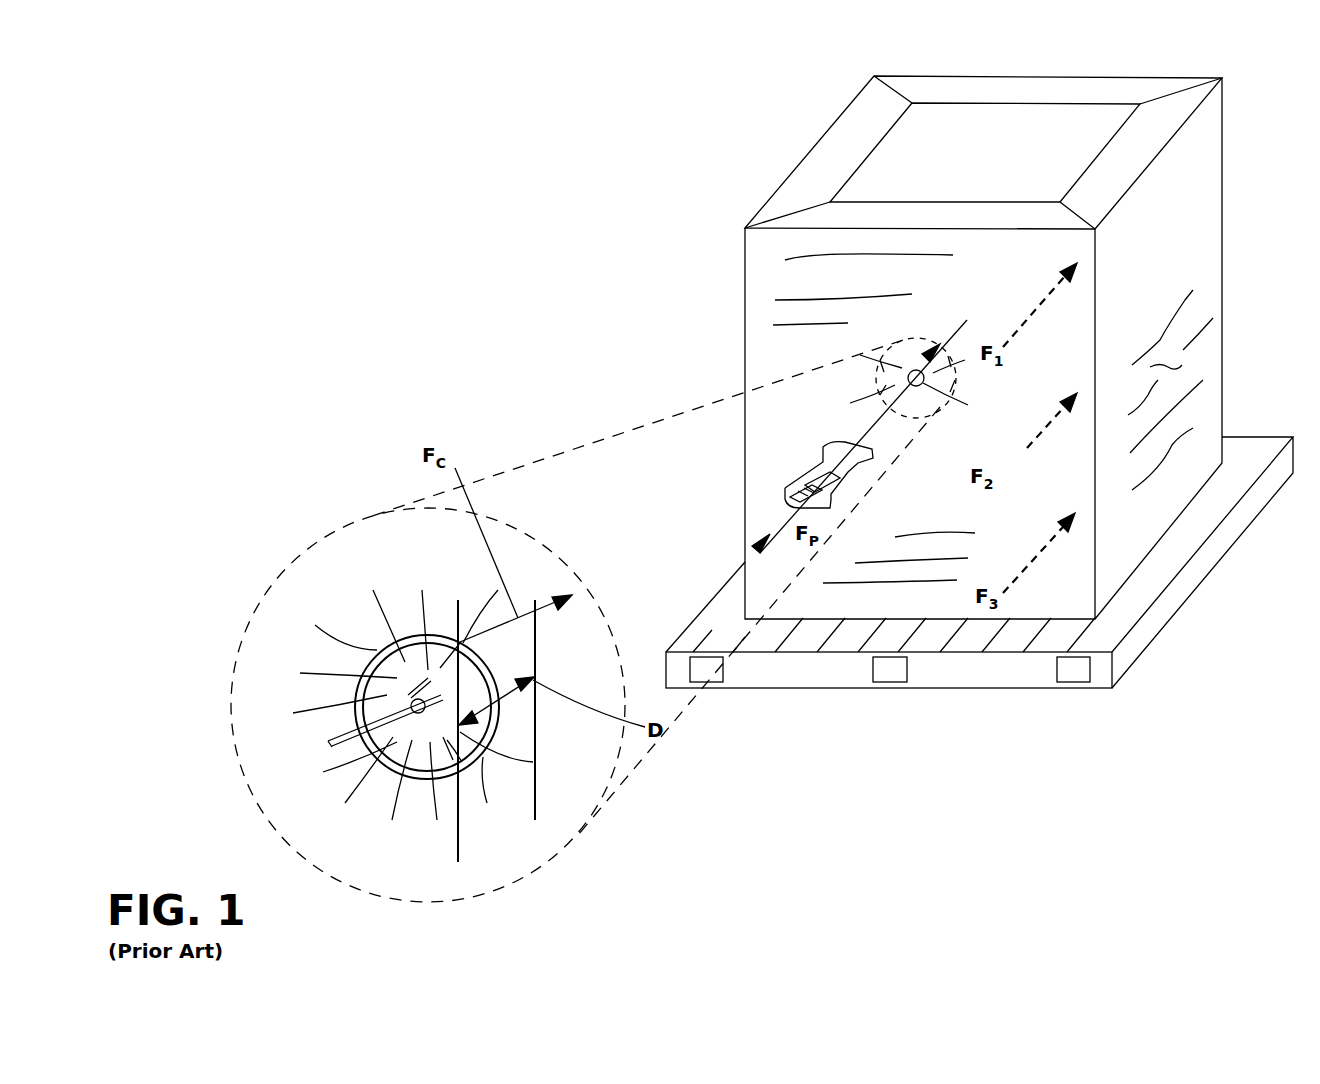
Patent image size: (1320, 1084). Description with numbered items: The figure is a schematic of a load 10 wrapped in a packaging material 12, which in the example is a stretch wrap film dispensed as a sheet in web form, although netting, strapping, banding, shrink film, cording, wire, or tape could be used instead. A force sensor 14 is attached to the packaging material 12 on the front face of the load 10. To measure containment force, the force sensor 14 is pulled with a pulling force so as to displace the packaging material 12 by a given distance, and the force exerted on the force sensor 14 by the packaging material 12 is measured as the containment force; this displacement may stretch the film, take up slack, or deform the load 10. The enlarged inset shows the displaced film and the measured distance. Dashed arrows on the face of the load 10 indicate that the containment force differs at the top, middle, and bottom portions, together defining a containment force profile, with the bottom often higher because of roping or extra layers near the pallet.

The load 10 is at (1037, 160).
The packaging material 12 is at (1170, 360).
The force sensor 14 is at (823, 460).